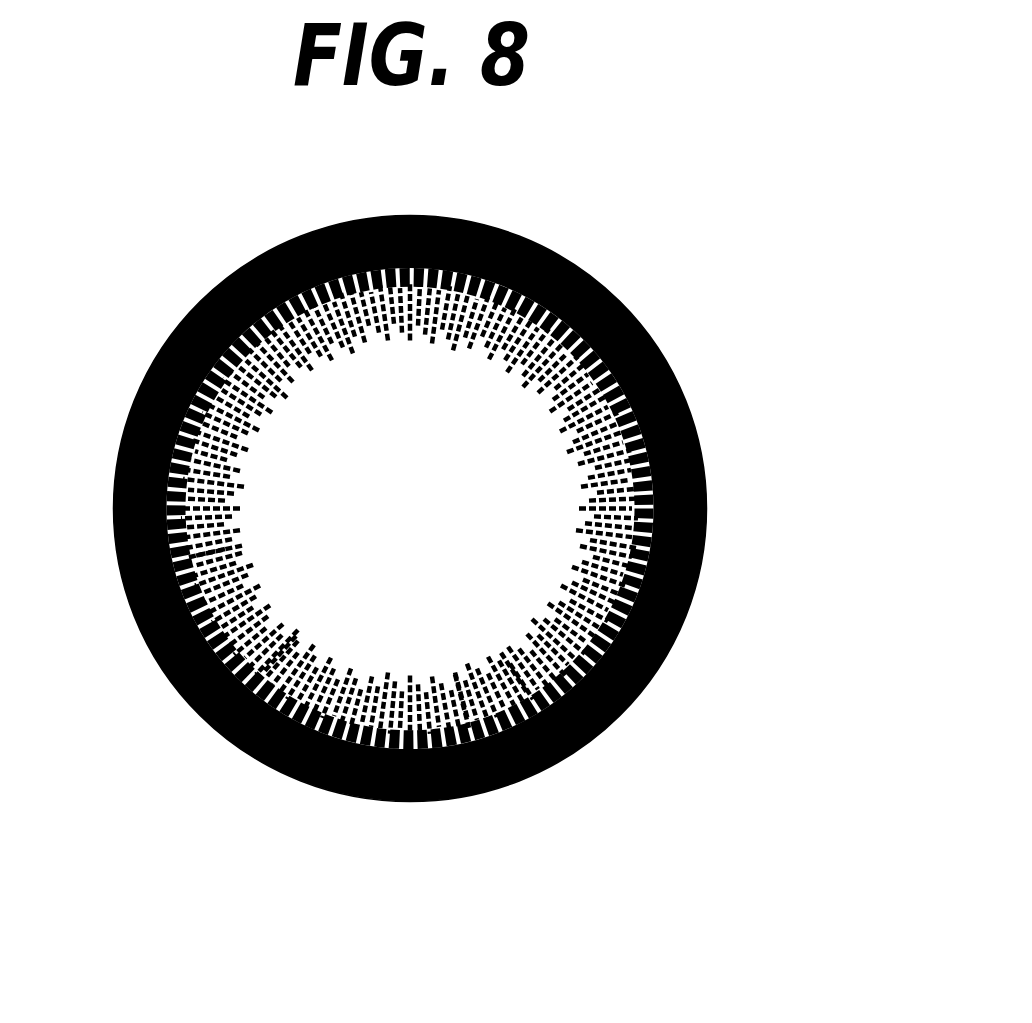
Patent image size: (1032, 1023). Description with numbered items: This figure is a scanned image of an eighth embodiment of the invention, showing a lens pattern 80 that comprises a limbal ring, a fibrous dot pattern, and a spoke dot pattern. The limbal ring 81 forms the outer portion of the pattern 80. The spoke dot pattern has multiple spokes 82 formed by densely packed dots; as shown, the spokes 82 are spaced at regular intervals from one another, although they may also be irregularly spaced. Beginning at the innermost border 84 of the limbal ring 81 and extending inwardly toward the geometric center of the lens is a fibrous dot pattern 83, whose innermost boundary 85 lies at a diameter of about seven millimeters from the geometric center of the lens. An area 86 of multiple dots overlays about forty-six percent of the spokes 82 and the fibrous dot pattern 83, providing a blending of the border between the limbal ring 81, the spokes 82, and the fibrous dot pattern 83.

The pattern 80 is at (778, 323).
The limbal ring 81 is at (668, 457).
The spokes 82 is at (618, 495).
The fibrous dot pattern 83 is at (287, 648).
The innermost border 84 is at (537, 712).
The innermost boundary 85 is at (238, 547).
The area 86 is at (470, 730).